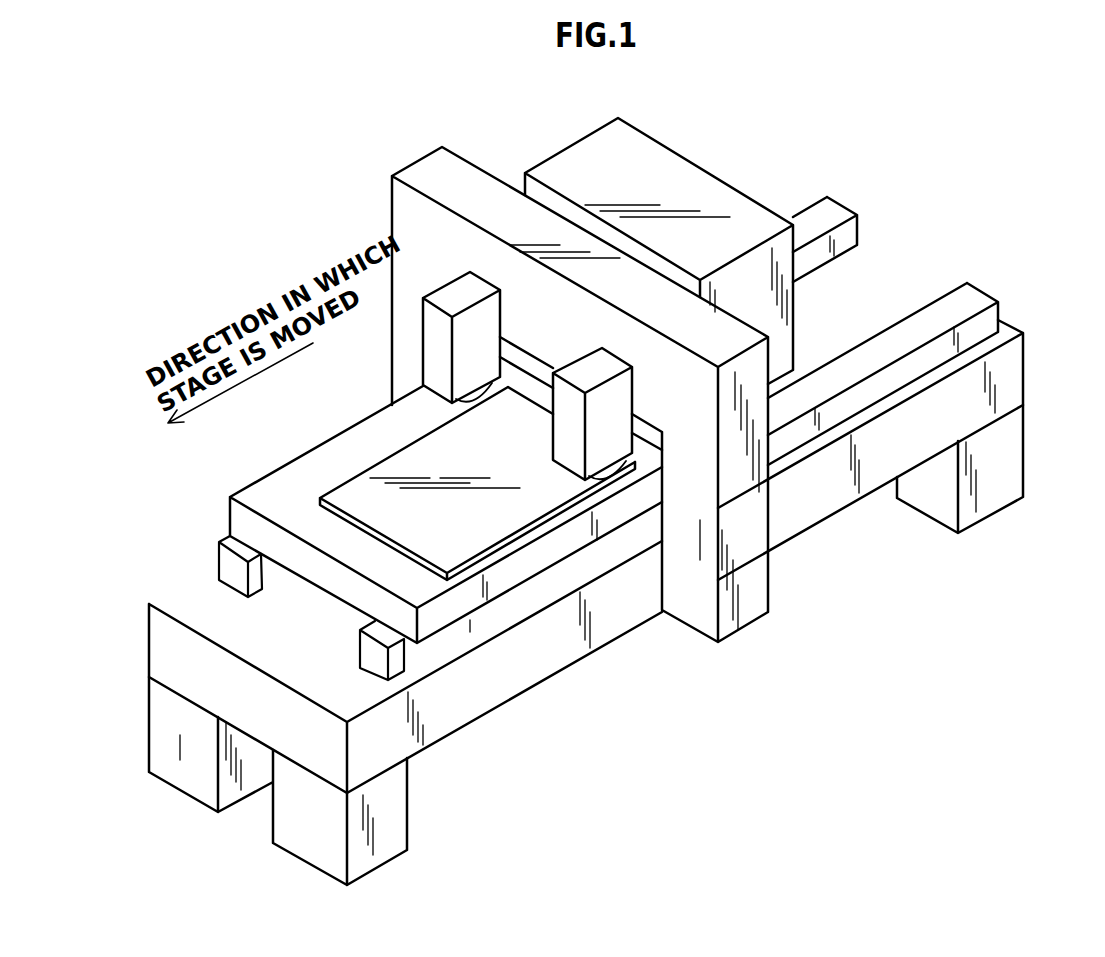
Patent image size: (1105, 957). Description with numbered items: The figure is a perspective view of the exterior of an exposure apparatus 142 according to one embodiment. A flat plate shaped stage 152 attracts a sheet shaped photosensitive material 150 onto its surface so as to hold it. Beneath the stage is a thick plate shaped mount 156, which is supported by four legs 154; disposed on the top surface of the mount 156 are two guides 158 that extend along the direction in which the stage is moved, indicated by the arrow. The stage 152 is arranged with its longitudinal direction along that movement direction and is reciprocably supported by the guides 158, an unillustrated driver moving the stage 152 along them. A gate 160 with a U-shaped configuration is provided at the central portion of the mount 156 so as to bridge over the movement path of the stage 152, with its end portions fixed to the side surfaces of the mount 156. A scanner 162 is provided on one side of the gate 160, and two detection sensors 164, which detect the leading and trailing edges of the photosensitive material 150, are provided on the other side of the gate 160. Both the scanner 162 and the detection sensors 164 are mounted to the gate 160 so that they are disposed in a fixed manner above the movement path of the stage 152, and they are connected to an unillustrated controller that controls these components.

The exposure apparatus 142 is at (815, 134).
The photosensitive material 150 is at (340, 495).
The stage 152 is at (340, 453).
The legs 154 is at (293, 840).
The mount 156 is at (503, 685).
The guides 158 is at (972, 302).
The gate 160 is at (752, 582).
The scanner 162 is at (680, 170).
The detection sensors 164 is at (567, 437).